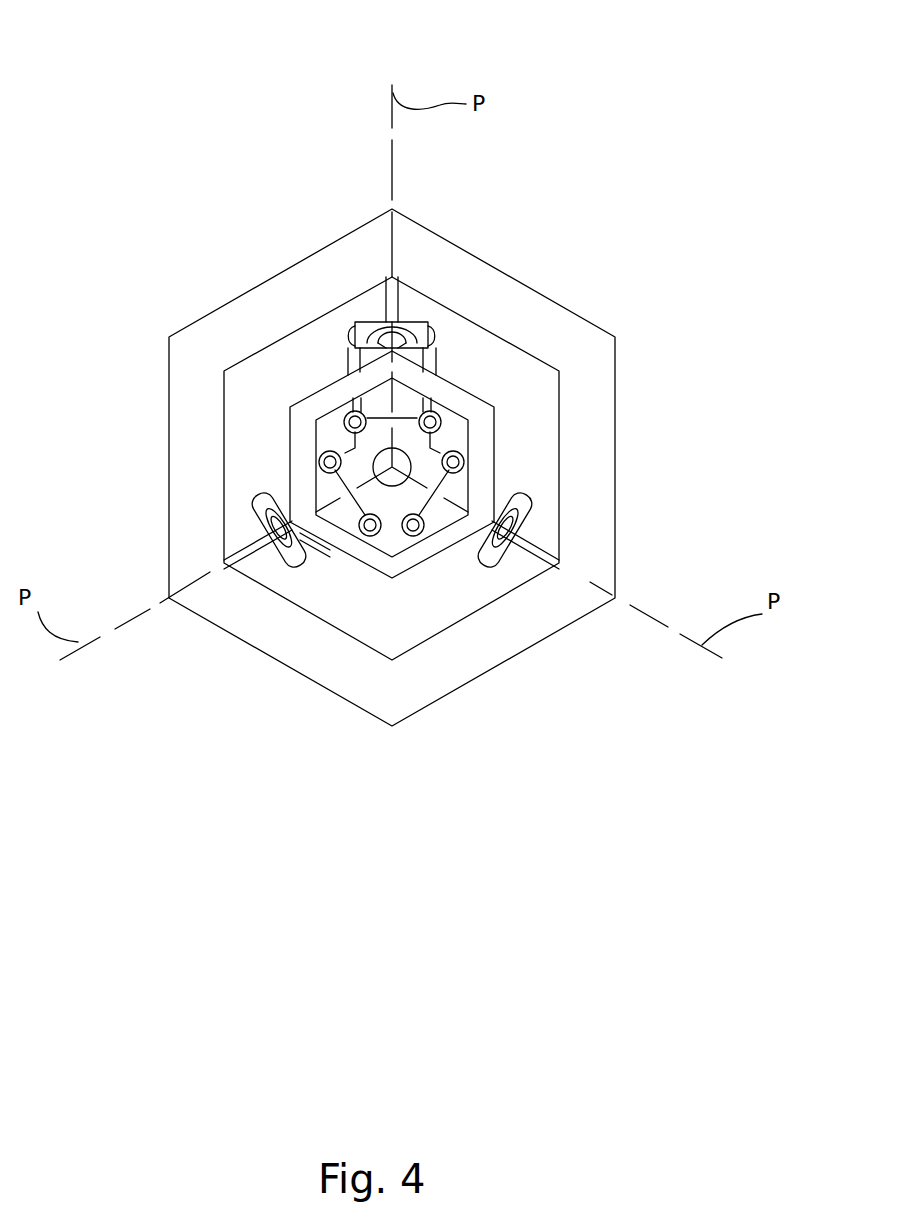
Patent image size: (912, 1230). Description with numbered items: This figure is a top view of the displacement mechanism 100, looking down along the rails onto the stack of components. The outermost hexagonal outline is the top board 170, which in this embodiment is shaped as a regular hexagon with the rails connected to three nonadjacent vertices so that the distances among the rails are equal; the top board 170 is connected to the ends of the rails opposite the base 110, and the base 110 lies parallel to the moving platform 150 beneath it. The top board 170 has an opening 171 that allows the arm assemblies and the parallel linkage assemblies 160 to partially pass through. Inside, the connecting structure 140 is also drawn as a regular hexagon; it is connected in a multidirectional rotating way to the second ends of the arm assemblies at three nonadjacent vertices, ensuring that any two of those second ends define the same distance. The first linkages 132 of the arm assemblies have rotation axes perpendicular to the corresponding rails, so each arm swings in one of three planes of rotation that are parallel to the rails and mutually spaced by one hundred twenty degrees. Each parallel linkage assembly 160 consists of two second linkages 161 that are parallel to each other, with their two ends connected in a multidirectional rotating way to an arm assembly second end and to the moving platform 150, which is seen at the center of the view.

The displacement mechanism 100 is at (133, 31).
The base 110 is at (538, 443).
The first linkage 132 is at (243, 540).
The connecting structure 140 is at (457, 400).
The moving platform 150 is at (400, 495).
The parallel linkage assembly 160 is at (336, 565).
The second linkage 161 is at (318, 560).
The top board 170 is at (280, 298).
The opening 171 is at (458, 331).